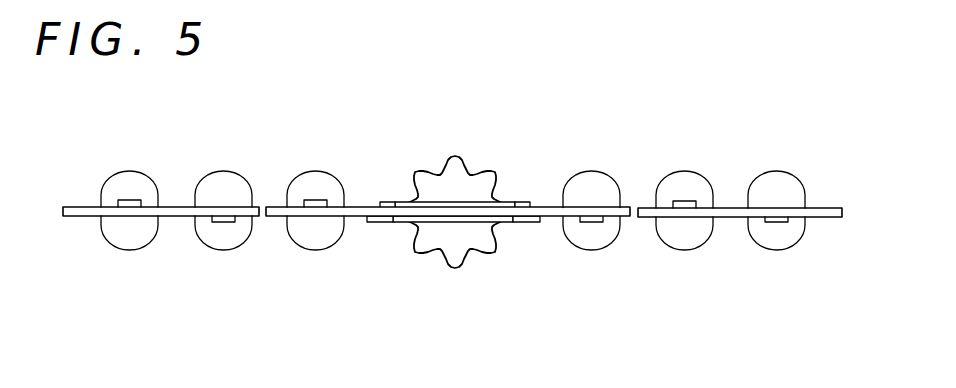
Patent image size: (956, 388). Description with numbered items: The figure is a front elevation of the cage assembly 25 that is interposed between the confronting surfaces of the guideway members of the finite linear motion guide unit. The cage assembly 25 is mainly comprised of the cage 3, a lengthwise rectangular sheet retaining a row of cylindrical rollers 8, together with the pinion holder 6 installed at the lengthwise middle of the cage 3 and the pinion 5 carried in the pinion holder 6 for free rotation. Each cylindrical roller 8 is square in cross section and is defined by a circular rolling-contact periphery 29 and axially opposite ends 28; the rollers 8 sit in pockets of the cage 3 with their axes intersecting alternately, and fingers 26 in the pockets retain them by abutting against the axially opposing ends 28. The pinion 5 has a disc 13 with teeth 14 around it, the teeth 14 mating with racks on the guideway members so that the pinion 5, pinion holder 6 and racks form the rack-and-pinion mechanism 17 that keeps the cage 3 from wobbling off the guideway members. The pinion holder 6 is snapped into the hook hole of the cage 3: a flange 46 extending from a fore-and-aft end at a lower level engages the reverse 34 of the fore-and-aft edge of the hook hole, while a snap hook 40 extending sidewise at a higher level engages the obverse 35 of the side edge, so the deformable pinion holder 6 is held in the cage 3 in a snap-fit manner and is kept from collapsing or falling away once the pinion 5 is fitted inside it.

The cage 3 is at (363, 207).
The pinion 5 is at (465, 185).
The pinion holder 6 is at (502, 203).
The cylindrical roller 8 is at (133, 233).
The disc 13 is at (468, 240).
The teeth 14 is at (453, 162).
The rack-and-pinion mechanism 17 is at (503, 160).
The cage assembly 25 is at (760, 151).
The fingers 26 is at (685, 203).
The axially opposite ends 28 is at (467, 225).
The circular rolling-contact periphery 29 is at (222, 190).
The reverse 34 is at (362, 222).
The obverse 35 is at (387, 203).
The snap hook 40 is at (445, 203).
The flange 46 is at (372, 224).